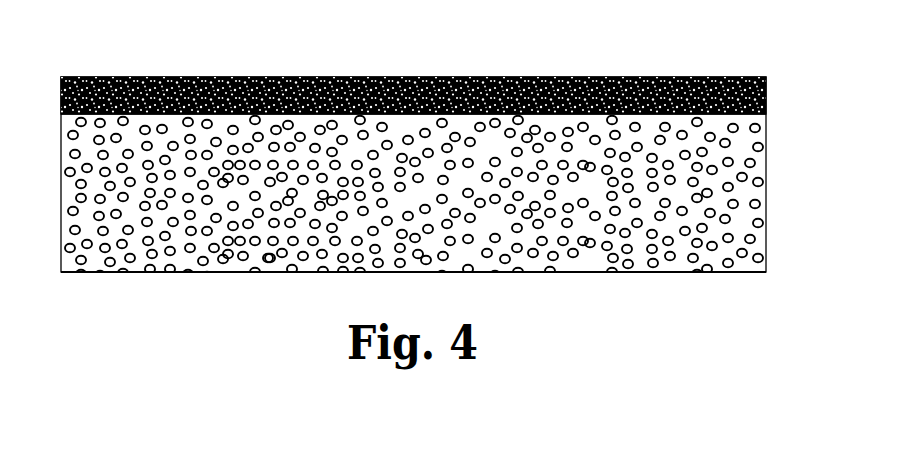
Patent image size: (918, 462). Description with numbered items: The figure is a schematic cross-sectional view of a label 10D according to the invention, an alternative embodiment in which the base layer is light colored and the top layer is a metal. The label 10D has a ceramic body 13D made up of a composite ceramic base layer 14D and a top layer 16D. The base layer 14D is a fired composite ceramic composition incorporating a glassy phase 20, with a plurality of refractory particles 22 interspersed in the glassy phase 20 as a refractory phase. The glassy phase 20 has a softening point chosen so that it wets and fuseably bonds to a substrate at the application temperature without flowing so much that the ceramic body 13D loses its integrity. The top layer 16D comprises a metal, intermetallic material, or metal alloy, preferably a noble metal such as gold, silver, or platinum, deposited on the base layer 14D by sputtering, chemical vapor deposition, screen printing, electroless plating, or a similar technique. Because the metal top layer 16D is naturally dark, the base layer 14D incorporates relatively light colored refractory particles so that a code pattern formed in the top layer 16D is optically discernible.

The label 10D is at (372, 50).
The top layer 16D is at (710, 78).
The ceramic body 13D is at (776, 189).
The composite ceramic base layer 14D is at (767, 262).
The glassy phase 20 is at (427, 265).
The refractory particles 22 is at (266, 263).